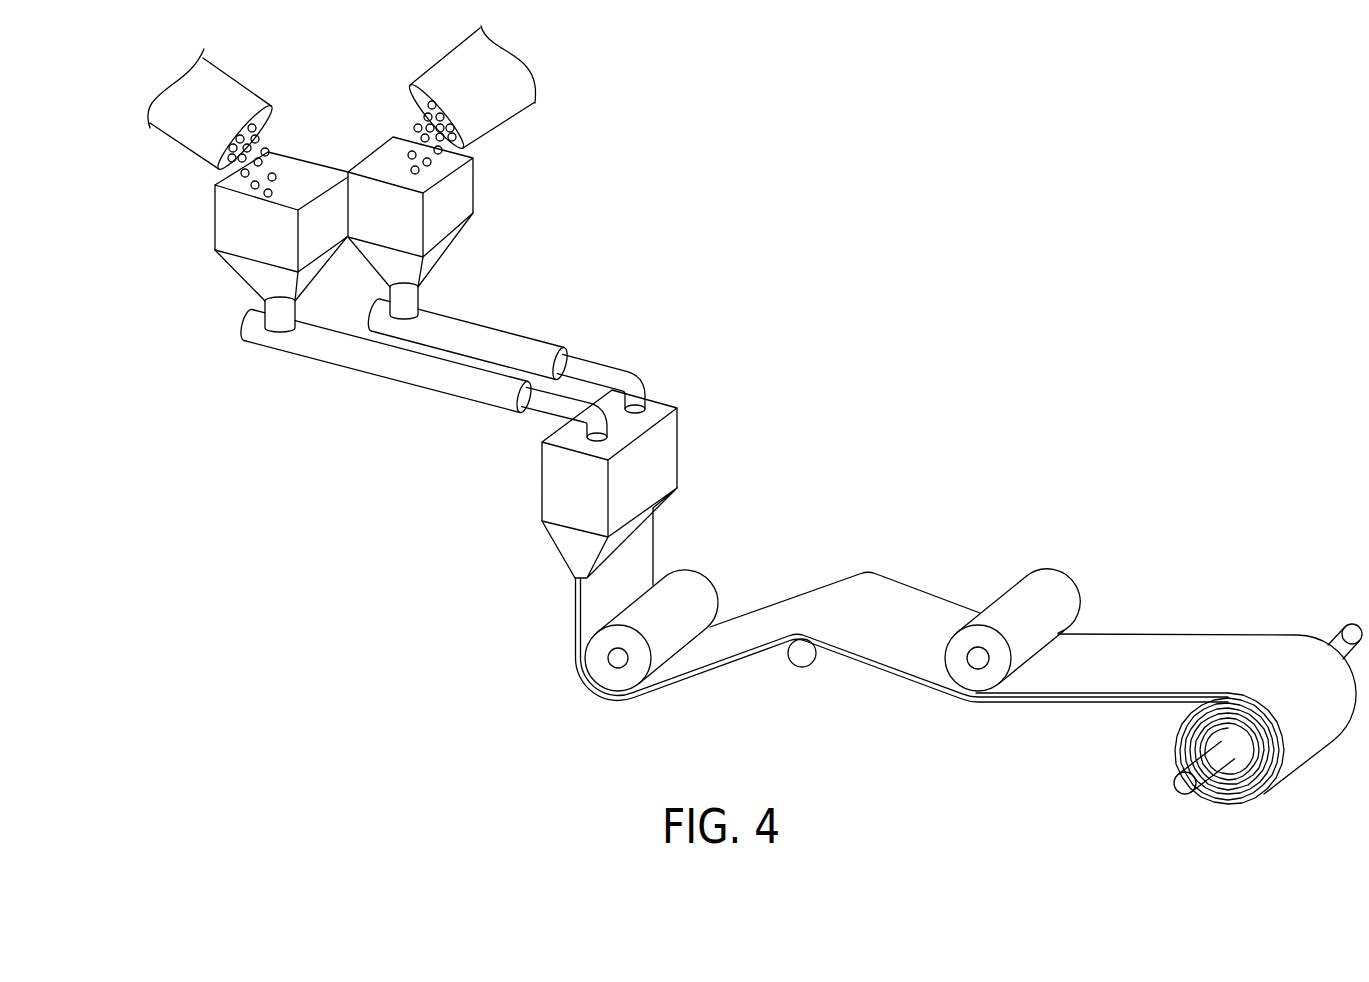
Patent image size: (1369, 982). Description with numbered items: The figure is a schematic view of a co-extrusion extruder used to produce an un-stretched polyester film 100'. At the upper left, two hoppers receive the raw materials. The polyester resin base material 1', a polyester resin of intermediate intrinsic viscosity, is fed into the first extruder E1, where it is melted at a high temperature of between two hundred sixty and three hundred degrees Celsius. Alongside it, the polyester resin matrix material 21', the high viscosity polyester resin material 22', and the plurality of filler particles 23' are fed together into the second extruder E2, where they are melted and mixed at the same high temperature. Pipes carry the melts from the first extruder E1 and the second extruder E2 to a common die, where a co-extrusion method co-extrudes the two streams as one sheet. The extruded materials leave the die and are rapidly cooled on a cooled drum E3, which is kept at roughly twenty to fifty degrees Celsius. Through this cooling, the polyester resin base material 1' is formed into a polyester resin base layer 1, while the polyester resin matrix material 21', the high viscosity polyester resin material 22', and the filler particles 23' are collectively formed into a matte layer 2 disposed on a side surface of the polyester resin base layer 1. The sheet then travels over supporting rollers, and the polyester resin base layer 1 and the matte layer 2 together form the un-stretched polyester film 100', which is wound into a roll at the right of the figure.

The polyester resin base layer 1 is at (902, 651).
The matte layer 2 is at (838, 598).
The polyester resin base material 1' is at (464, 157).
The polyester resin matrix material 21' is at (147, 181).
The high viscosity polyester resin material 22' is at (248, 157).
The filler particles 23' is at (258, 183).
The first extruder E1 is at (442, 255).
The second extruder E2 is at (240, 280).
The cooled drum E3 is at (707, 568).
The un-stretched polyester film 100' is at (1142, 656).